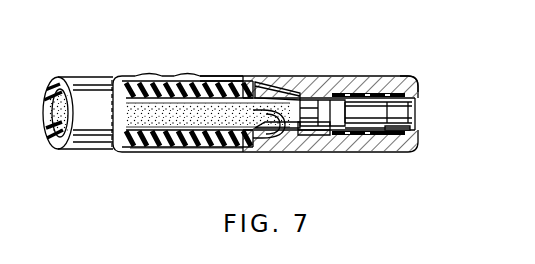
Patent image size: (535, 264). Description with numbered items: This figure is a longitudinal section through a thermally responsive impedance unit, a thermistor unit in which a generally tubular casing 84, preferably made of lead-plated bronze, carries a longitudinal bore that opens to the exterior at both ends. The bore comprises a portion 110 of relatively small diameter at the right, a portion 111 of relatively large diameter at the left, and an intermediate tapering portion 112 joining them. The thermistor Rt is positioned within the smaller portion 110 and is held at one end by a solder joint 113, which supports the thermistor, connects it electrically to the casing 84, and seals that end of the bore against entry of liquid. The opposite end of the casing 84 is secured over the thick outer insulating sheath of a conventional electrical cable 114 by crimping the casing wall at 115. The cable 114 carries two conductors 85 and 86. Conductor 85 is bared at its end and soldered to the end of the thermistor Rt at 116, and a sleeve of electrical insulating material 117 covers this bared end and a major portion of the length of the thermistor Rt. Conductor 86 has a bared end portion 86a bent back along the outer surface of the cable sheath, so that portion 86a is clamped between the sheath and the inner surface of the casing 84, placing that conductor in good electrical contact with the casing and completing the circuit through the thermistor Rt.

The tubular casing 84 is at (372, 78).
The conductor 85 is at (314, 99).
The conductor 86 is at (254, 154).
The bared end portion 86a is at (174, 151).
The bore portion of relatively small diameter 110 is at (411, 76).
The bore portion of relatively large diameter 111 is at (210, 77).
The intermediate tapering portion 112 is at (273, 80).
The solder joint 113 is at (411, 129).
The electrical cable 114 is at (100, 153).
The crimp 115 is at (187, 76).
The solder connection 116 is at (313, 136).
The insulating sleeve 117 is at (378, 133).
The thermistor Rt is at (408, 110).